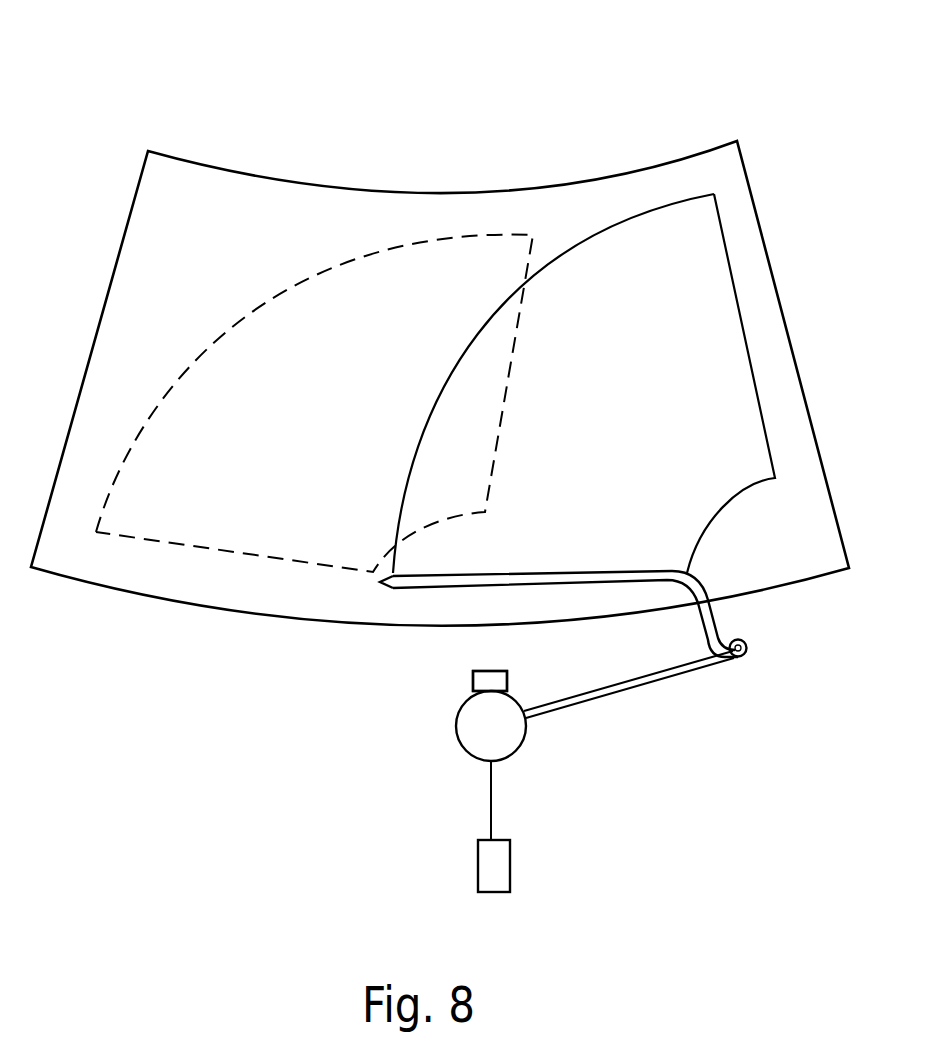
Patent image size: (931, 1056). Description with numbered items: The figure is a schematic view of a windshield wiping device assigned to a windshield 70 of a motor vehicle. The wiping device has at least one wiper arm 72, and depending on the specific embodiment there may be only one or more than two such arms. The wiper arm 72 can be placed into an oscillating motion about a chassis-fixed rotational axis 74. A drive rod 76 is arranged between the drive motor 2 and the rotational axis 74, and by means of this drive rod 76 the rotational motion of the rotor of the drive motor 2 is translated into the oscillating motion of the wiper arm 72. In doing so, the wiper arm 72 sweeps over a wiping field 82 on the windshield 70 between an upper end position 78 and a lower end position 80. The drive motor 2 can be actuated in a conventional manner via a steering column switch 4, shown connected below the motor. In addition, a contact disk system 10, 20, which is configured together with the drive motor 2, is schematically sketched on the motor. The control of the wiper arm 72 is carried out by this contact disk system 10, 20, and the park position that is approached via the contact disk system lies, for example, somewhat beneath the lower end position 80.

The drive motor 2 is at (460, 742).
The steering column switch 4 is at (478, 862).
The contact disk system 10 is at (496, 686).
The contact disk system 20 is at (490, 681).
The windshield 70 is at (728, 177).
The wiper arm 72 is at (452, 578).
The rotational axis 74 is at (745, 656).
The drive rod 76 is at (633, 688).
The upper end position 78 is at (740, 315).
The lower end position 80 is at (402, 592).
The wiping field 82 is at (630, 258).